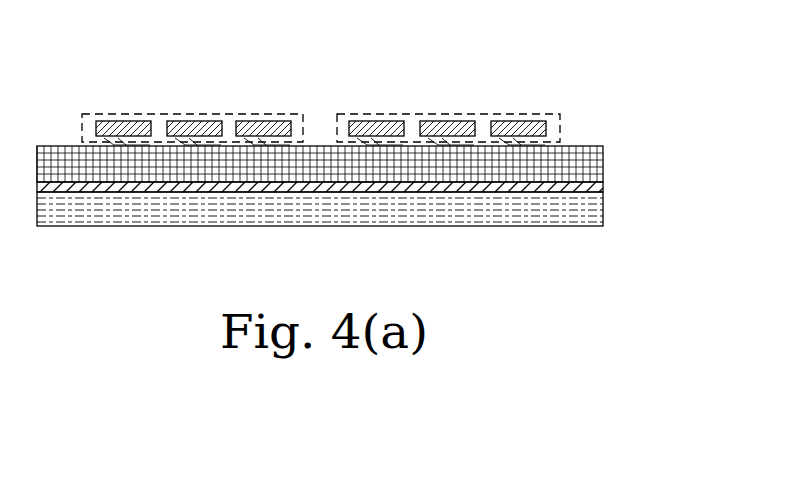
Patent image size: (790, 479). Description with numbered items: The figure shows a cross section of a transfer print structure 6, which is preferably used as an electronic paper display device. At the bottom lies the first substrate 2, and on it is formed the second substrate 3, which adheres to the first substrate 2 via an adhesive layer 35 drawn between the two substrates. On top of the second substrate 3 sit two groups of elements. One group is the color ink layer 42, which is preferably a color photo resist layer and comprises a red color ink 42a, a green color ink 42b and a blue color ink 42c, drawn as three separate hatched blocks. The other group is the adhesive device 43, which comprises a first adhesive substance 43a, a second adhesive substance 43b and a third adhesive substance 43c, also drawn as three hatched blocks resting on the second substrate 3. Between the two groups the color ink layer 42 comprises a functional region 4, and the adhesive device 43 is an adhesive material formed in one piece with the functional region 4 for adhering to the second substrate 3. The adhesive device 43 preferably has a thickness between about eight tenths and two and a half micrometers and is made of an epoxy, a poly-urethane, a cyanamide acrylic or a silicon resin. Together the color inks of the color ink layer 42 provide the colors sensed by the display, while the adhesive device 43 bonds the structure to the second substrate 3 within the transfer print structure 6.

The first substrate 2 is at (603, 218).
The second substrate 3 is at (603, 162).
The adhesive layer 35 is at (603, 188).
The functional region 4 is at (342, 106).
The color ink layer 42 is at (520, 72).
The red color ink 42a is at (389, 120).
The green color ink 42b is at (459, 120).
The blue color ink 42c is at (532, 120).
The adhesive device 43 is at (265, 72).
The first adhesive substance 43a is at (96, 118).
The second adhesive substance 43b is at (167, 118).
The third adhesive substance 43c is at (236, 118).
The transfer print structure 6 is at (154, 281).